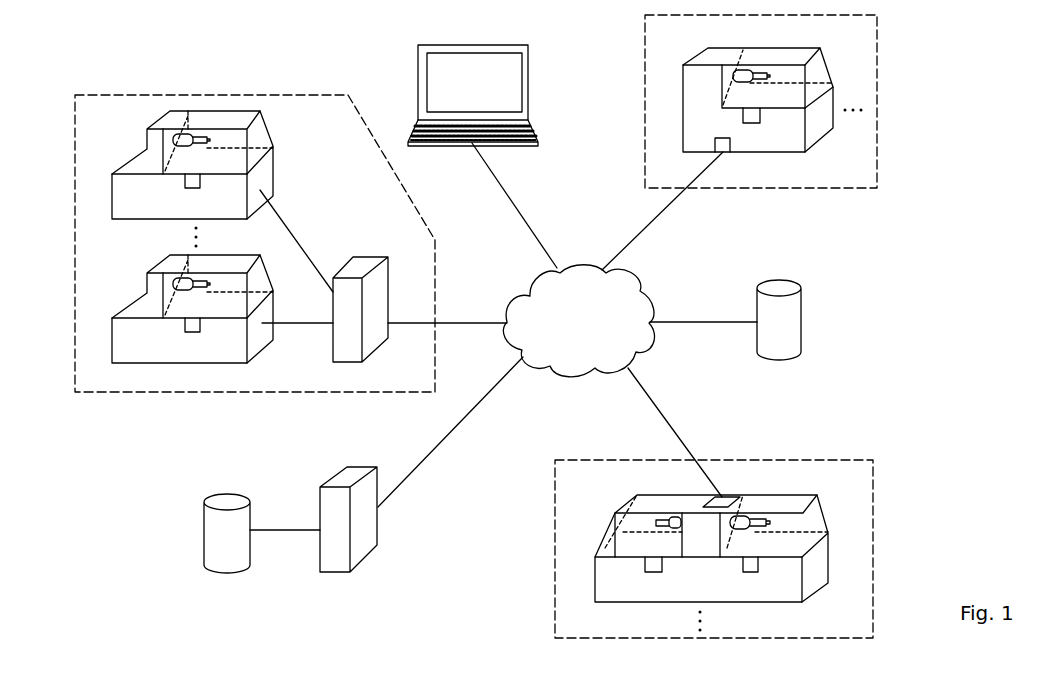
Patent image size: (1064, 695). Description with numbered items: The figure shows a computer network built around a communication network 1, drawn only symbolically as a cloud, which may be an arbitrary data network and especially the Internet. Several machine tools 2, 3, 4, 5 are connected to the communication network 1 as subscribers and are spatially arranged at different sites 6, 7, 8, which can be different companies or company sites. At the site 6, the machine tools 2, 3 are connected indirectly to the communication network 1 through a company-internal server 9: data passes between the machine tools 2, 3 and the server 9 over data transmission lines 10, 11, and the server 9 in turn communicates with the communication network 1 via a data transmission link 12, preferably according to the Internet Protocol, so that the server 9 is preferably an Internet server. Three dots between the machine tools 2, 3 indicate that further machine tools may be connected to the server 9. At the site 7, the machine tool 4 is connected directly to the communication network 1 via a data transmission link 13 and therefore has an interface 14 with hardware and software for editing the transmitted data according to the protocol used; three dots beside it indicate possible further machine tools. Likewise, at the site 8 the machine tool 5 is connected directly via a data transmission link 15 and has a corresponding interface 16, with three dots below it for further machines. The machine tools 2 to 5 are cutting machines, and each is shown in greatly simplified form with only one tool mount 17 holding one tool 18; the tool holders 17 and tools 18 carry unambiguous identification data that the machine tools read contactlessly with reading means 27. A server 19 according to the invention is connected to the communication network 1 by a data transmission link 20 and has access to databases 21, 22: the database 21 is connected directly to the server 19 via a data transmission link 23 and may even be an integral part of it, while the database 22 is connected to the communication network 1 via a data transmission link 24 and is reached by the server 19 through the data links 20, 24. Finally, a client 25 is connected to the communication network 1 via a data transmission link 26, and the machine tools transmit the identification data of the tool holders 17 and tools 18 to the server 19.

The communication network 1 is at (592, 333).
The machine tool 2 is at (125, 354).
The machine tool 3 is at (125, 208).
The machine tool 4 is at (693, 133).
The machine tool 5 is at (603, 594).
The site 6 is at (120, 395).
The site 7 is at (878, 125).
The site 8 is at (873, 483).
The server 9 is at (368, 260).
The data transmission line 10 is at (300, 325).
The data transmission line 11 is at (277, 207).
The data transmission link 12 is at (467, 322).
The data transmission link 13 is at (650, 223).
The interface 14 is at (725, 152).
The data transmission link 15 is at (668, 423).
The interface 16 is at (725, 495).
The tool mount 17 is at (173, 283).
The tool 18 is at (205, 288).
The server 19 is at (373, 525).
The data transmission link 20 is at (455, 428).
The database 21 is at (210, 545).
The database 22 is at (792, 320).
The data transmission link 23 is at (282, 532).
The data transmission link 24 is at (668, 322).
The client 25 is at (530, 120).
The data transmission link 26 is at (509, 196).
The reading means 27 is at (202, 325).